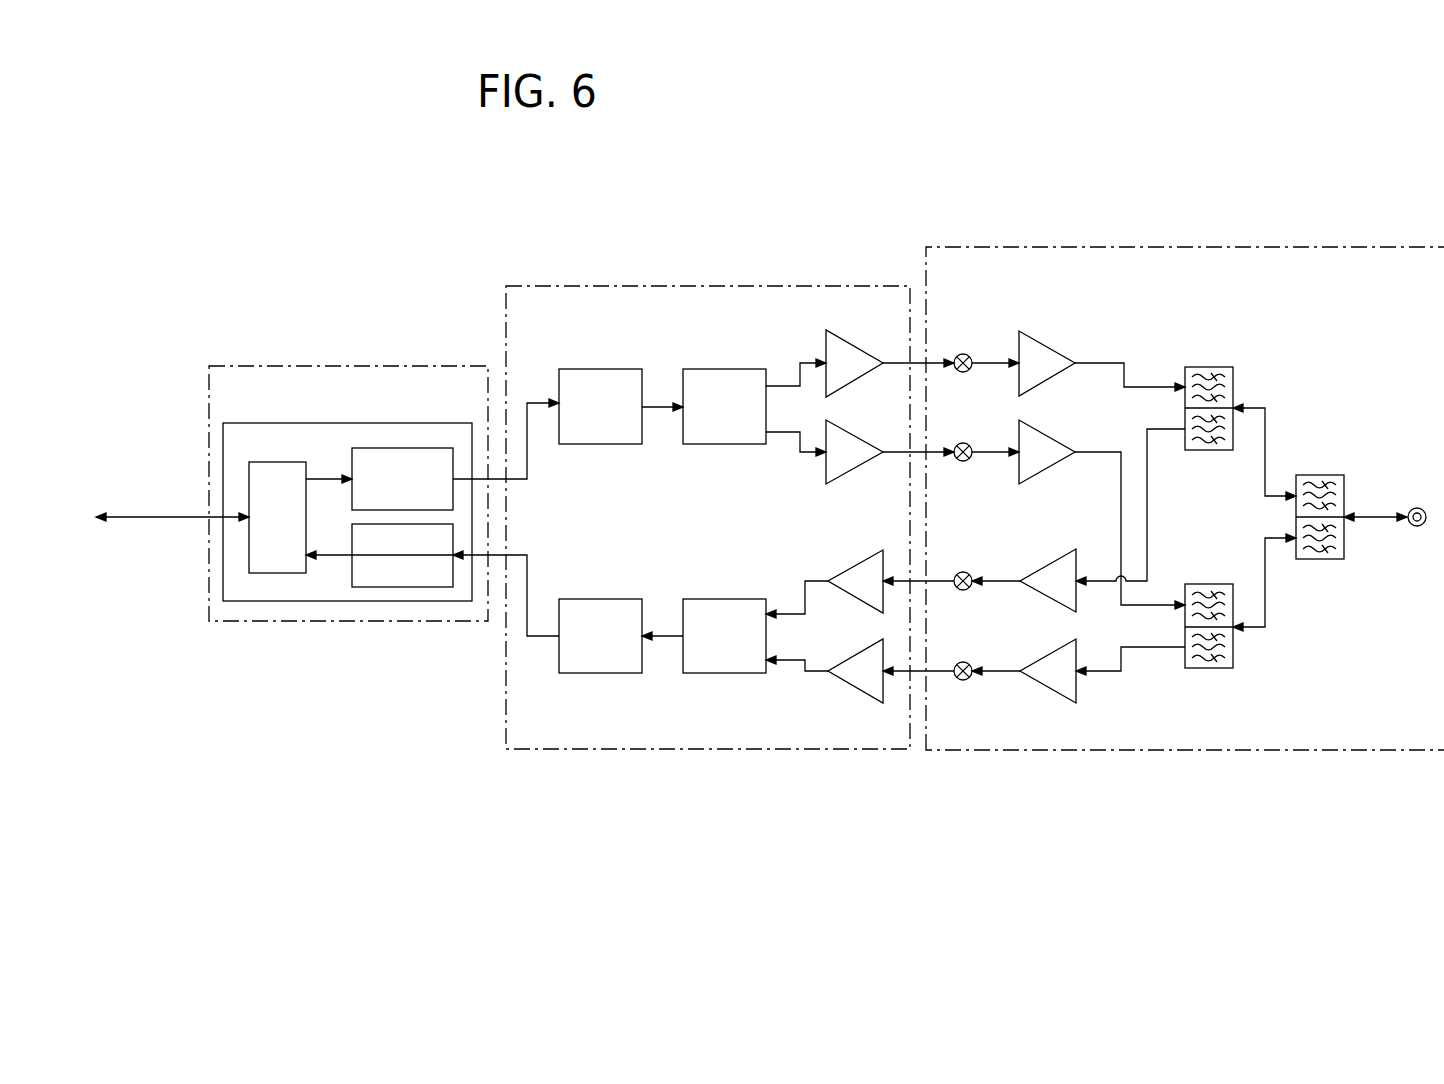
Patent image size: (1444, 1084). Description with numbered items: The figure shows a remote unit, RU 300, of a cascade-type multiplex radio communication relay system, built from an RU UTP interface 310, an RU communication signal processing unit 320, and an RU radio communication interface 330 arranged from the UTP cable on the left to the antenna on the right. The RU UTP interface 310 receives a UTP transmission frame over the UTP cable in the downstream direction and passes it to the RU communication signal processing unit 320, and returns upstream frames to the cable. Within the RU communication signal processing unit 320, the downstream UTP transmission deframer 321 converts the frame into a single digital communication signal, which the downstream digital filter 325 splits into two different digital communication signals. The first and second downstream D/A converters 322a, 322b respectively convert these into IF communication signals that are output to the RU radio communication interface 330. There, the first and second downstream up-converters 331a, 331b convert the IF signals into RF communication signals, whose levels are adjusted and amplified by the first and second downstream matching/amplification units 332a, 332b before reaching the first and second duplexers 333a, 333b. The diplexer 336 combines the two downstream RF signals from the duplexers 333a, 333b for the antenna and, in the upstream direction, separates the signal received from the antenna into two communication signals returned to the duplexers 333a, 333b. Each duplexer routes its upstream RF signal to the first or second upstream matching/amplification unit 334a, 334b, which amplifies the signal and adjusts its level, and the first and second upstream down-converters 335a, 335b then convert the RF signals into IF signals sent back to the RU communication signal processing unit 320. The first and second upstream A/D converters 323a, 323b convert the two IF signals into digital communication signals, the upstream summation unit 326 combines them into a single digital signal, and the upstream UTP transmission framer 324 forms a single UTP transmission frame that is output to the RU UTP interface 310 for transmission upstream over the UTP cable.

The RU 300 is at (990, 186).
The RU UTP interface 310 is at (349, 621).
The RU communication signal processing unit 320 is at (708, 542).
The downstream UTP transmission deframer 321 is at (600, 444).
The first downstream D/A converter 322a is at (858, 348).
The second downstream D/A converter 322b is at (858, 437).
The first upstream A/D converter 323a is at (858, 565).
The second upstream A/D converter 323b is at (855, 688).
The upstream UTP transmission framer 324 is at (600, 673).
The downstream digital filter 325 is at (723, 444).
The upstream summation unit 326 is at (723, 673).
The RU radio communication interface 330 is at (1163, 524).
The first downstream up-converter 331a is at (963, 354).
The second downstream up-converter 331b is at (963, 443).
The first downstream matching/amplification unit 332a is at (1050, 349).
The second downstream matching/amplification unit 332b is at (1050, 438).
The first duplexer 333a is at (1233, 395).
The second duplexer 333b is at (1233, 668).
The first upstream matching/amplification unit 334a is at (1050, 563).
The second upstream matching/amplification unit 334b is at (1050, 653).
The first upstream down-converter 335a is at (963, 572).
The second upstream down-converter 335b is at (963, 662).
The diplexer 336 is at (1318, 560).